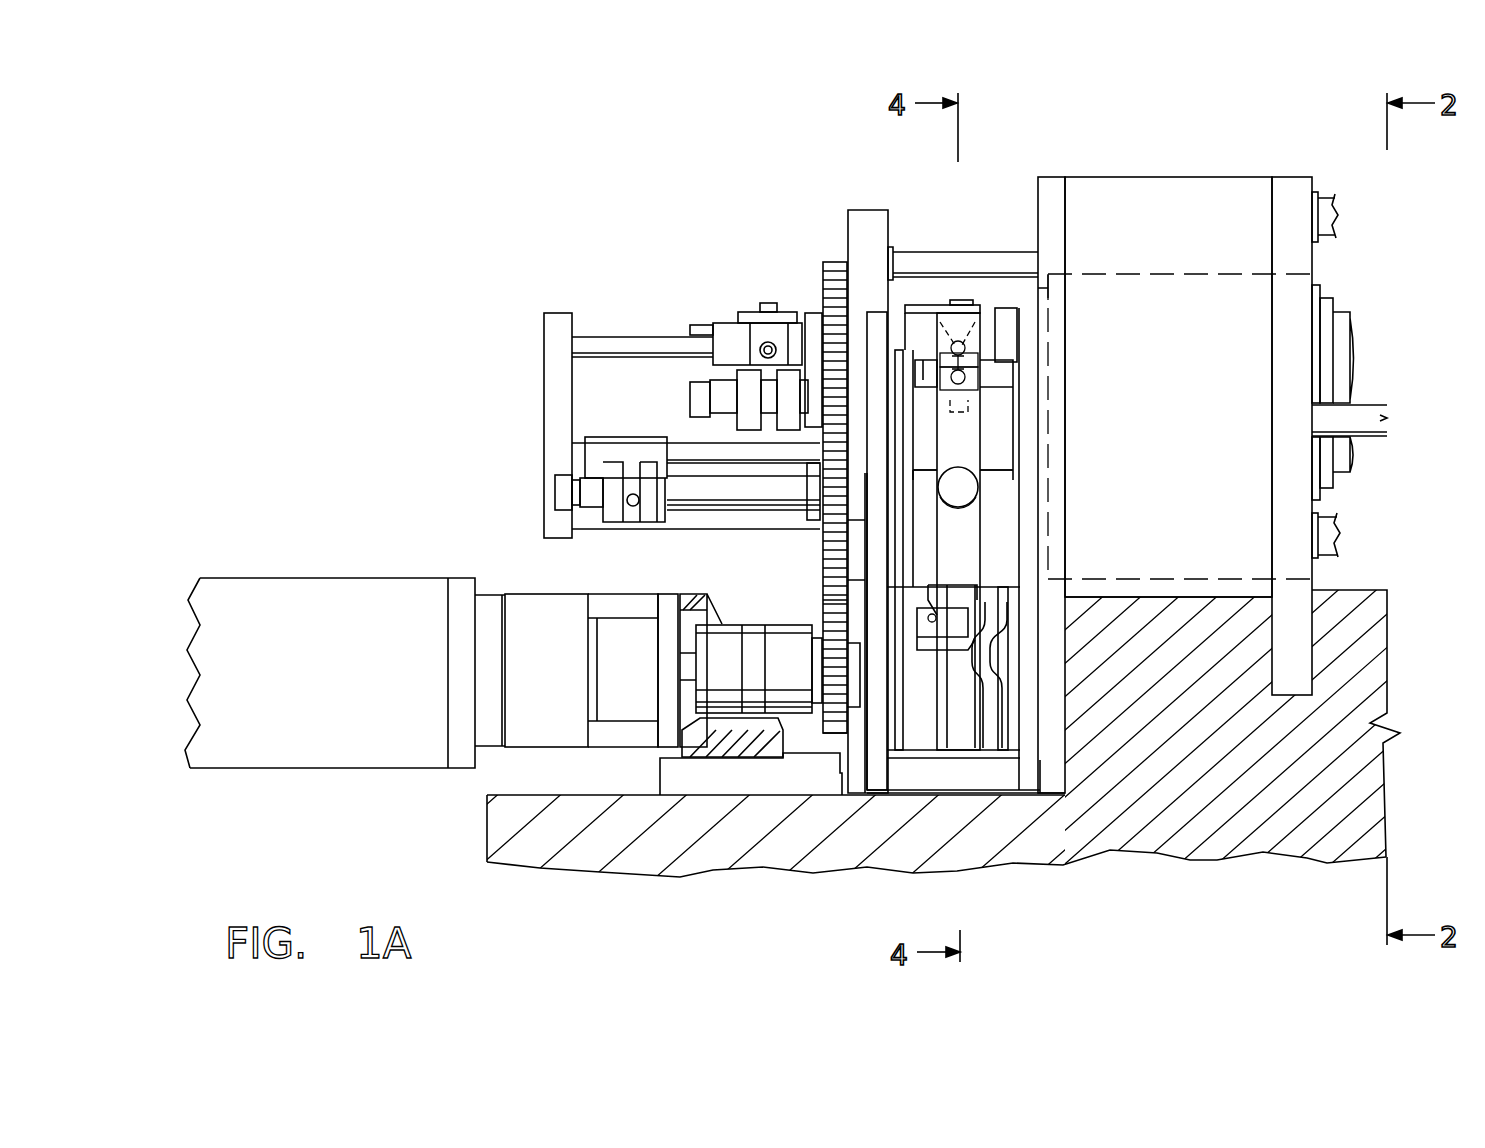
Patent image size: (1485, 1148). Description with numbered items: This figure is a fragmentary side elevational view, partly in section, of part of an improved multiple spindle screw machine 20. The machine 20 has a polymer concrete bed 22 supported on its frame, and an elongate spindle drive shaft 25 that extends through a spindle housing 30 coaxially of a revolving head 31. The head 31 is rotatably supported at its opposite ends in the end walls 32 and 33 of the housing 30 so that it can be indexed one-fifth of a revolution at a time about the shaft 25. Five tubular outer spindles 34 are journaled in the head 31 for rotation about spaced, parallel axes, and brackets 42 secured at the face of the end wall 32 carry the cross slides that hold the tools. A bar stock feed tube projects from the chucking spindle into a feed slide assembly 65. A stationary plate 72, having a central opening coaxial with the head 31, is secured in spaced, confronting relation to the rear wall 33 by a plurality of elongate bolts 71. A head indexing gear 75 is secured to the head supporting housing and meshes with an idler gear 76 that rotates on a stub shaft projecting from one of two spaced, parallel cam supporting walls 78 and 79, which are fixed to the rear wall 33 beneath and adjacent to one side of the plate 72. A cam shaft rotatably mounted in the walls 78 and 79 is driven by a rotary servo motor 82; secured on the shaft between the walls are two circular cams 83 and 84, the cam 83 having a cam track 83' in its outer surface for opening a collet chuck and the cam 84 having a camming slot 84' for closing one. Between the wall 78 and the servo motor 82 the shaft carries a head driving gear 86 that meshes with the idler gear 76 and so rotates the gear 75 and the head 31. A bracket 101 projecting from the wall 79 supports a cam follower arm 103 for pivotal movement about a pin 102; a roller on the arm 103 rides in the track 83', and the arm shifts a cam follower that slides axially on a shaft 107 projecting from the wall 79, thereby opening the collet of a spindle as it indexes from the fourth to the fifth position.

The multiple spindle screw machine 20 is at (780, 226).
The polymer concrete bed 22 is at (1265, 835).
The spindle drive shaft 25 is at (1357, 428).
The spindle housing 30 is at (1250, 152).
The revolving head 31 is at (1140, 270).
The end wall 32 is at (1300, 177).
The end wall 33 is at (1043, 183).
The outer spindle 34 is at (1333, 310).
The bracket 42 is at (1336, 212).
The feed slide assembly 65 is at (735, 295).
The bolt 71 is at (930, 253).
The stationary plate 72 is at (866, 212).
The head indexing gear 75 is at (822, 295).
The idler gear 76 is at (827, 523).
The cam supporting wall 78 is at (873, 780).
The cam supporting wall 79 is at (1033, 770).
The rotary servo motor 82 is at (316, 564).
The circular cam 83 is at (876, 612).
The cam track 83' is at (936, 770).
The circular cam 84 is at (955, 753).
The camming slot 84' is at (1004, 767).
The head driving gear 86 is at (838, 612).
The bracket 101 is at (998, 468).
The pin 102 is at (973, 490).
The cam follower arm 103 is at (977, 547).
The shaft 107 is at (1007, 385).